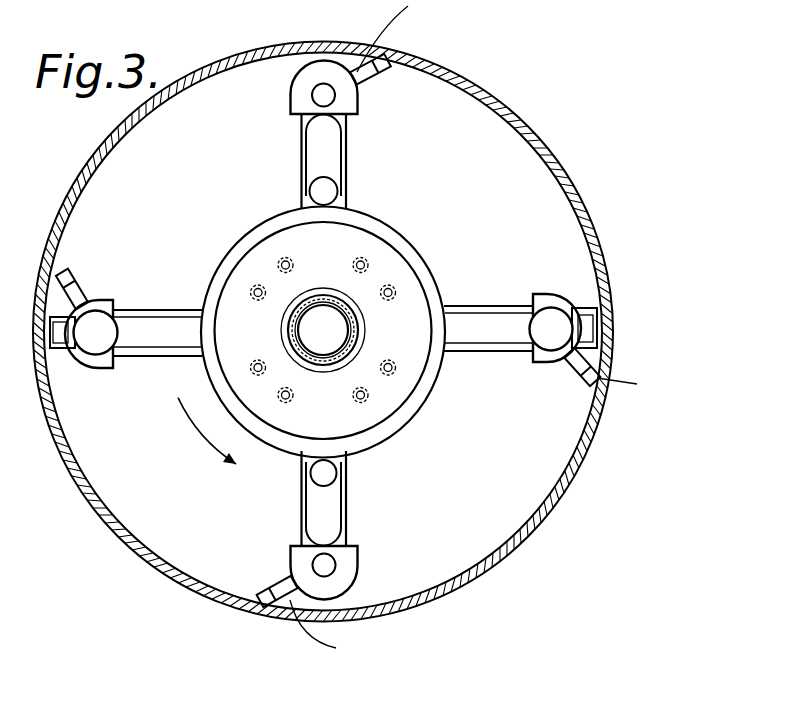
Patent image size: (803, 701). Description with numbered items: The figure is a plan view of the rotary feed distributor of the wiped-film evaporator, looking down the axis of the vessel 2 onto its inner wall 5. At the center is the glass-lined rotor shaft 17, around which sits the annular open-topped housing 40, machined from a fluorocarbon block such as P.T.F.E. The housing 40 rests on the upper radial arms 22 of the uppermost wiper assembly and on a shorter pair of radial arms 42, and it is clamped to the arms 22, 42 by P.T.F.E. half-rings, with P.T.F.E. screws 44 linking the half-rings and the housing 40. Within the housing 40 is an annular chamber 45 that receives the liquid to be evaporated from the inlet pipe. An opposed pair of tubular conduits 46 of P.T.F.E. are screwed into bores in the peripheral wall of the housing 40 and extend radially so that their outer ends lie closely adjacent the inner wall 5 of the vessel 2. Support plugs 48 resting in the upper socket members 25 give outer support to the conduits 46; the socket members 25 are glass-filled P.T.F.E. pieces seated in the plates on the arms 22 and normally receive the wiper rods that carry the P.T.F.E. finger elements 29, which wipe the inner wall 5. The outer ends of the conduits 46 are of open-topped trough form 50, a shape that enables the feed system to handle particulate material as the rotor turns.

The vessel 2 is at (522, 146).
The inner wall 5 is at (528, 156).
The shaft 17 is at (308, 314).
The radial arms 22 is at (335, 162).
The socket members 25 is at (329, 96).
The finger elements 29 is at (375, 83).
The housing 40 is at (275, 222).
The shorter pair of radial arms 42 is at (328, 192).
The screws 44 is at (365, 263).
The annular chamber 45 is at (330, 414).
The tubular conduits 46 is at (148, 342).
The support plugs 48 is at (98, 330).
The open-topped trough form 50 is at (62, 352).